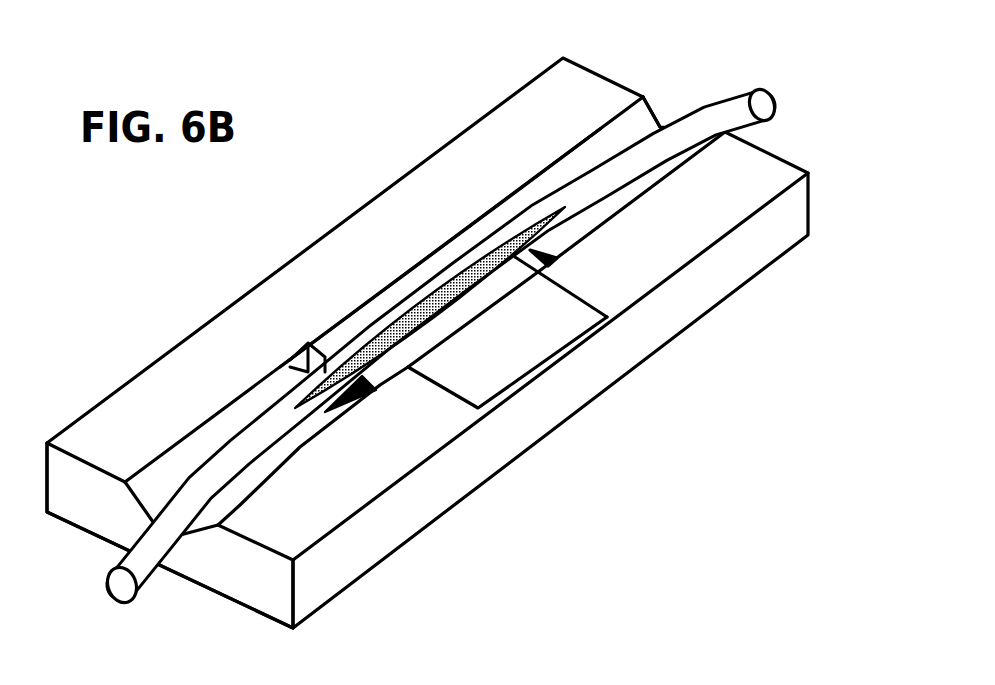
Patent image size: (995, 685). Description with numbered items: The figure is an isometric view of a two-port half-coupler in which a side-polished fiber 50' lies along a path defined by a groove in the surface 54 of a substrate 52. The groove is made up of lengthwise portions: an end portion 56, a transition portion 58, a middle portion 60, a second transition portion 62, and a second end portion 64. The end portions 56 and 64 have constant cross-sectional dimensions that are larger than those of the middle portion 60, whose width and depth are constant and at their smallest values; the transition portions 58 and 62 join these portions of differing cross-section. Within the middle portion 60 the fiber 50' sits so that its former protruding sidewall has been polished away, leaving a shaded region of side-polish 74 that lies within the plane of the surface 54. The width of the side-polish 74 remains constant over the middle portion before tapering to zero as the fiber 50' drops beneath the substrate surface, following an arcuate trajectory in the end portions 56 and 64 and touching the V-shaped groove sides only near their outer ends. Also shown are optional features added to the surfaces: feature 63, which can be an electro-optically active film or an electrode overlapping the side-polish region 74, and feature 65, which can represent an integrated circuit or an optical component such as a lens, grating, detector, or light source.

The side-polished fiber 50' is at (487, 328).
The substrate 52 is at (778, 225).
The surface of the substrate 54 is at (572, 90).
The end groove portion 56 is at (157, 483).
The transition groove portion 58 is at (307, 367).
The middle groove portion 60 is at (375, 320).
The transition groove portion 62 is at (483, 222).
The electro-optically active film 63 is at (412, 357).
The end groove portion 64 is at (632, 125).
The integrated circuit 65 is at (557, 306).
The region of side-polish 74 is at (447, 290).